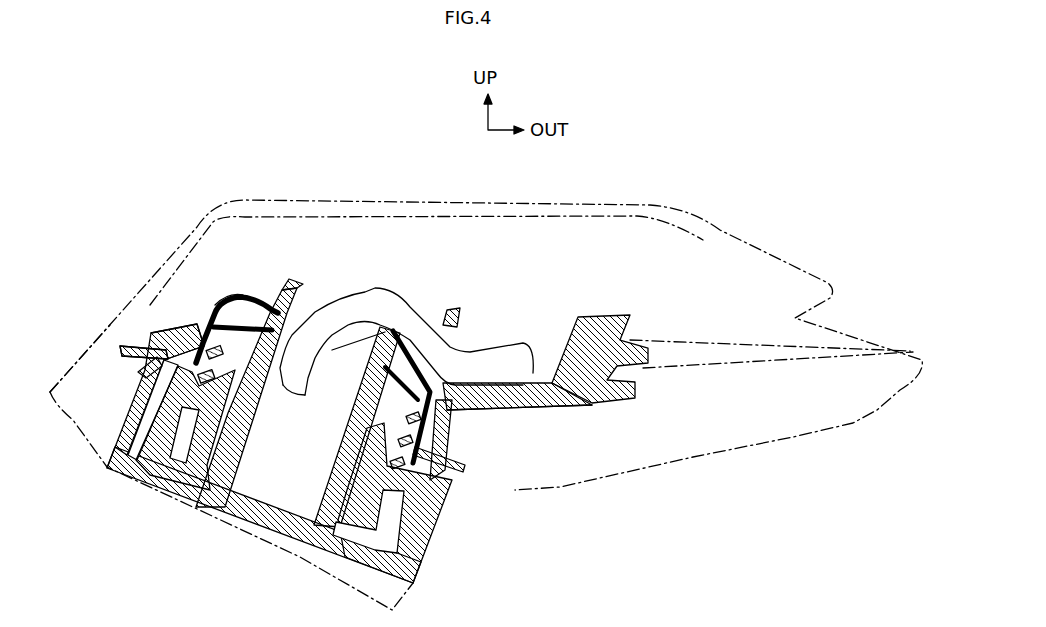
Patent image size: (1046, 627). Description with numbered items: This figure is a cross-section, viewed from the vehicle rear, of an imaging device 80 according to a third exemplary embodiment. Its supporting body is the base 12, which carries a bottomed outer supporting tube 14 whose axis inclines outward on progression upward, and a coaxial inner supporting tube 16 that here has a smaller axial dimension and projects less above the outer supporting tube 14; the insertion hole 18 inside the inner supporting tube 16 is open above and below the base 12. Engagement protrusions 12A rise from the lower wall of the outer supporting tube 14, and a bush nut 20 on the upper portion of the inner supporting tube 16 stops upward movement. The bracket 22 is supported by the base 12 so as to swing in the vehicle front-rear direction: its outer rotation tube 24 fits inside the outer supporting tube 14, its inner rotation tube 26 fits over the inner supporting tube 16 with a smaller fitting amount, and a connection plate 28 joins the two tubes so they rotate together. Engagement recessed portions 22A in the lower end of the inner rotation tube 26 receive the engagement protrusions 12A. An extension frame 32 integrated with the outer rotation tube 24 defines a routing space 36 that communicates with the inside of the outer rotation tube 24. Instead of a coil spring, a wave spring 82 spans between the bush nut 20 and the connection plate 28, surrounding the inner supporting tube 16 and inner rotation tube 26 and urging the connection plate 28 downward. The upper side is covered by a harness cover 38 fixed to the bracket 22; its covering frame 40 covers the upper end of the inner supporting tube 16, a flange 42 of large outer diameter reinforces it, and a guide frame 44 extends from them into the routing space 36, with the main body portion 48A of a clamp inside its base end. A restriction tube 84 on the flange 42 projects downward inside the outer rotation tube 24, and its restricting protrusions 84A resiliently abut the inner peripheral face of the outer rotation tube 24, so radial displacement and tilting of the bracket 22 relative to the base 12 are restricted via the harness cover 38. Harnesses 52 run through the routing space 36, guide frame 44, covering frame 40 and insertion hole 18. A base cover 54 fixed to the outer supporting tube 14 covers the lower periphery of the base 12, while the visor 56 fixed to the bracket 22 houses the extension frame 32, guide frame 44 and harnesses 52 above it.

The base 12 is at (105, 468).
The engagement protrusions 12A is at (140, 427).
The outer supporting tube 14 is at (443, 532).
The inner supporting tube 16 is at (205, 310).
The insertion hole 18 is at (230, 497).
The bush nut 20 is at (260, 312).
The bracket 22 is at (157, 318).
The engagement recessed portions 22A is at (192, 480).
The outer rotation tube 24 is at (143, 367).
The inner rotation tube 26 is at (450, 428).
The connection plate 28 is at (410, 505).
The extension frame 32 is at (533, 410).
The routing space 36 is at (563, 327).
The harness cover 38 is at (227, 292).
The covering frame 40 is at (293, 289).
The flange 42 is at (245, 300).
The guide frame 44 is at (513, 410).
The main body portion 48A is at (462, 310).
The harnesses 52 is at (418, 294).
The base cover 54 is at (80, 355).
The visor 56 is at (376, 198).
The imaging device 80 is at (232, 160).
The wave spring 82 is at (183, 334).
The restriction tube 84 is at (203, 280).
The restricting protrusions 84A is at (140, 353).